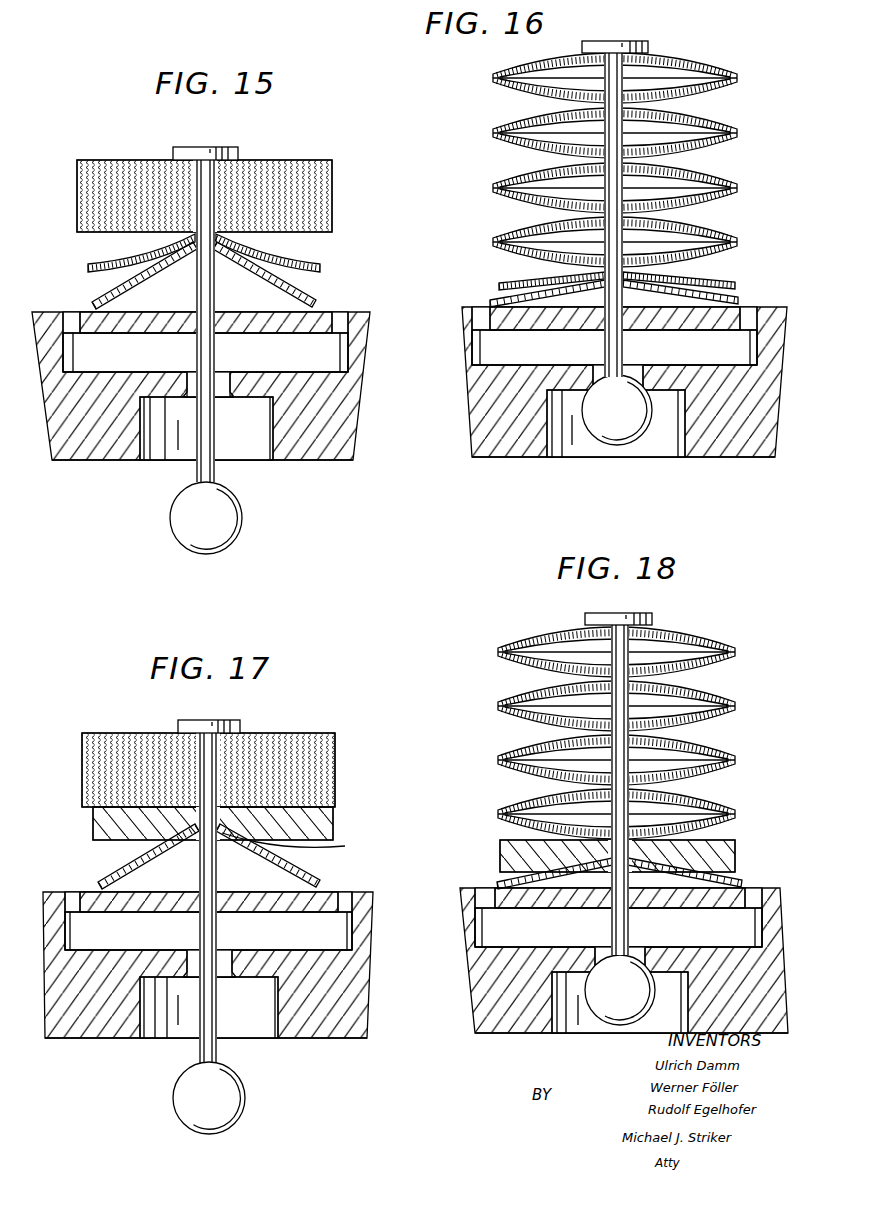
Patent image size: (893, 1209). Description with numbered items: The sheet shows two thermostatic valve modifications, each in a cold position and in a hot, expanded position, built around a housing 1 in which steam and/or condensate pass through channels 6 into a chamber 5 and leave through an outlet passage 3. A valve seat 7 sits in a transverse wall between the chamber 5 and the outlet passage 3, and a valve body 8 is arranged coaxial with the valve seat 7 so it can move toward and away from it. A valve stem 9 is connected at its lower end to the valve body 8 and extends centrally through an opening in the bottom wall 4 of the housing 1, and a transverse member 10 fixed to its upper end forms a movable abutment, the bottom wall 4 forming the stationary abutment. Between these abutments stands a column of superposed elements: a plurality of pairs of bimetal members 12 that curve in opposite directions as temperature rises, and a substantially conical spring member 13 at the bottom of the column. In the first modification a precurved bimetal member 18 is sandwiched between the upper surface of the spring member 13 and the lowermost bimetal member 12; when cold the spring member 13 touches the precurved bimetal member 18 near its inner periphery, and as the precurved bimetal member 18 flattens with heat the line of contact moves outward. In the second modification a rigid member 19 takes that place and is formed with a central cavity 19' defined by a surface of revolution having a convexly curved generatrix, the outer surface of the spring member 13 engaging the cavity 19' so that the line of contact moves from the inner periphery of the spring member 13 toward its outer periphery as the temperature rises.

In FIG. 15, the housing 1 is at (355, 380).
In FIG. 16, the housing 1 is at (470, 414).
In FIG. 17, the housing 1 is at (357, 966).
In FIG. 18, the housing 1 is at (475, 985).
In FIG. 15, the outlet passage 3 is at (252, 463).
In FIG. 16, the outlet passage 3 is at (553, 458).
In FIG. 17, the outlet passage 3 is at (151, 1027).
In FIG. 18, the outlet passage 3 is at (631, 1002).
In FIG. 15, the bottom wall 4 is at (360, 312).
In FIG. 16, the bottom wall 4 is at (772, 307).
In FIG. 17, the bottom wall 4 is at (58, 892).
In FIG. 18, the bottom wall 4 is at (468, 888).
In FIG. 15, the chamber 5 is at (288, 360).
In FIG. 16, the chamber 5 is at (485, 350).
In FIG. 17, the chamber 5 is at (345, 928).
In FIG. 18, the chamber 5 is at (485, 933).
In FIG. 15, the channels 6 is at (341, 312).
In FIG. 16, the channels 6 is at (482, 307).
In FIG. 17, the channels 6 is at (346, 892).
In FIG. 18, the channels 6 is at (486, 888).
In FIG. 15, the valve seat 7 is at (224, 397).
In FIG. 16, the valve seat 7 is at (635, 380).
In FIG. 17, the valve seat 7 is at (226, 981).
In FIG. 18, the valve seat 7 is at (636, 966).
In FIG. 15, the valve body 8 is at (185, 528).
In FIG. 16, the valve body 8 is at (614, 446).
In FIG. 17, the valve body 8 is at (206, 1121).
In FIG. 18, the valve body 8 is at (637, 1003).
In FIG. 15, the valve stem 9 is at (197, 288).
In FIG. 16, the valve stem 9 is at (605, 141).
In FIG. 17, the valve stem 9 is at (198, 866).
In FIG. 18, the valve stem 9 is at (606, 823).
In FIG. 15, the transverse member 10 is at (175, 152).
In FIG. 16, the transverse member 10 is at (581, 48).
In FIG. 17, the transverse member 10 is at (178, 722).
In FIG. 18, the transverse member 10 is at (585, 619).
In FIG. 15, the bimetal members 12 is at (334, 170).
In FIG. 16, the bimetal members 12 is at (737, 72).
In FIG. 17, the bimetal members 12 is at (334, 744).
In FIG. 18, the bimetal members 12 is at (736, 697).
In FIG. 15, the spring member 13 is at (310, 292).
In FIG. 16, the spring member 13 is at (739, 299).
In FIG. 17, the spring member 13 is at (307, 869).
In FIG. 18, the spring member 13 is at (740, 877).
In FIG. 15, the precurved bimetal member 18 is at (320, 266).
In FIG. 16, the precurved bimetal member 18 is at (737, 281).
In FIG. 17, the rigid member 19 is at (234, 822).
In FIG. 18, the rigid member 19 is at (639, 844).
In FIG. 17, the central cavity 19' is at (297, 841).